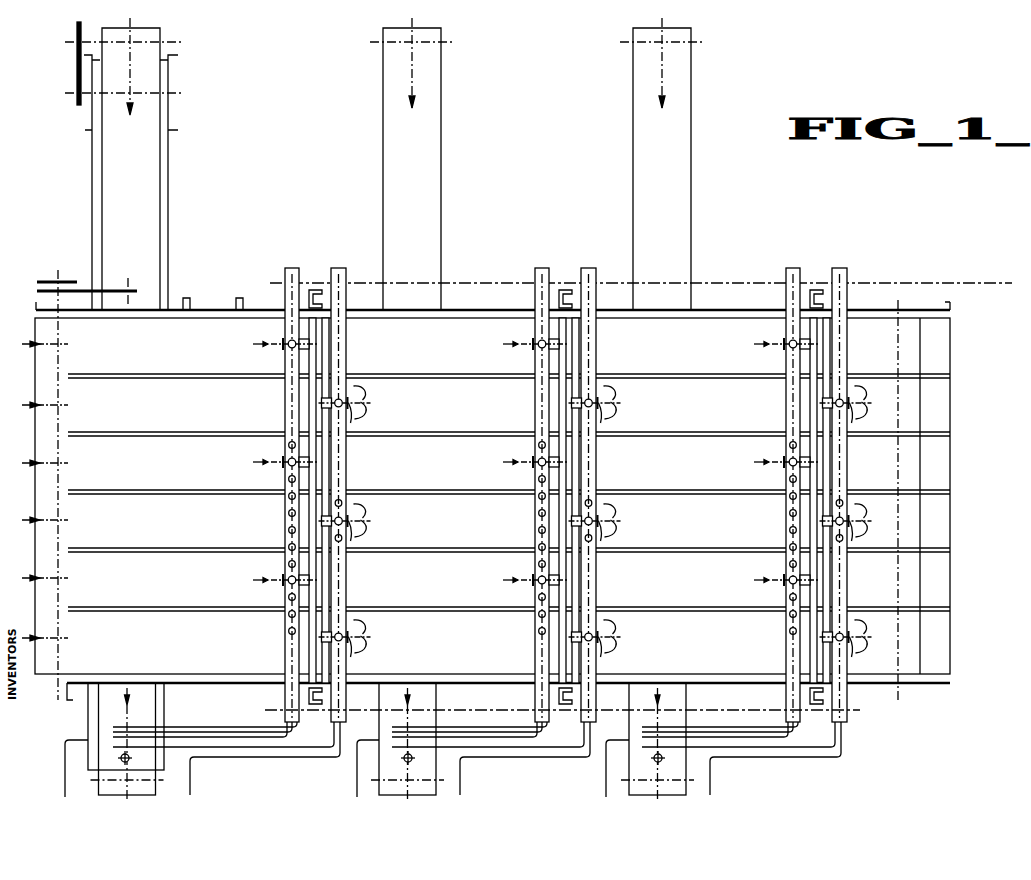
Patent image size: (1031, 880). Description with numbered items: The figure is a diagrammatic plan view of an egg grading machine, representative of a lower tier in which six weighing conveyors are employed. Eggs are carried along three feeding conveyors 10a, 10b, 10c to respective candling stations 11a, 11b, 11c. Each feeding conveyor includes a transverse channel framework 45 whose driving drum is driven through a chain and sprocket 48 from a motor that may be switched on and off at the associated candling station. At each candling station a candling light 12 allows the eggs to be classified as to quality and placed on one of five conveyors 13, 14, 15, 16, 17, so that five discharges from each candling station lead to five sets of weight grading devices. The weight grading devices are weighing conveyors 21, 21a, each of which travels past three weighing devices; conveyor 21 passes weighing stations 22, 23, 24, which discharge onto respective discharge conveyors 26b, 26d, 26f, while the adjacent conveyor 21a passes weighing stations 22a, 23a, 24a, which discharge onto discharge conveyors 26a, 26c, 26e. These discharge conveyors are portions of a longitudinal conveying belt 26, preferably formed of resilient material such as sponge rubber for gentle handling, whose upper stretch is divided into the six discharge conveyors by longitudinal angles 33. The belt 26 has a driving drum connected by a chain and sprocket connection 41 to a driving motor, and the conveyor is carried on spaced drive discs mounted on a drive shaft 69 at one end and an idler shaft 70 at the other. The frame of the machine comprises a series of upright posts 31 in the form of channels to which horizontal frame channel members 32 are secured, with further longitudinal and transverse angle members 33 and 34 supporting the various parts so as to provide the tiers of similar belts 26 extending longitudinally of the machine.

The feeding conveyor 10a is at (110, 184).
The feeding conveyor 10b is at (388, 184).
The feeding conveyor 10c is at (638, 184).
The candling station 11a is at (126, 749).
The candling station 11b is at (407, 749).
The candling station 11c is at (657, 749).
The candling light 12 is at (122, 761).
The conveyor 13 is at (174, 731).
The conveyor 14 is at (199, 735).
The conveyor 15 is at (222, 739).
The conveyor 16 is at (229, 750).
The conveyor 17 is at (258, 754).
The weighing conveyor 21 is at (284, 525).
The weighing conveyor 21a is at (347, 585).
The weighing device 22 is at (282, 580).
The weighing station 22a is at (600, 647).
The weighing device 23 is at (284, 462).
The weighing station 23a is at (600, 538).
The weighing device 24 is at (284, 346).
The weighing station 24a is at (600, 420).
The conveying belt 26 is at (33, 433).
The discharge conveyor 26a is at (178, 651).
The discharge conveyor 26b is at (178, 590).
The discharge conveyor 26c is at (178, 533).
The discharge conveyor 26d is at (178, 473).
The discharge conveyor 26e is at (178, 415).
The discharge conveyor 26f is at (178, 357).
The upright post 31 is at (312, 286).
The horizontal frame channel member 32 is at (205, 309).
The longitudinal angle member 33 is at (428, 424).
The angle member 34 is at (322, 353).
The chain and sprocket connection 41 is at (38, 292).
The transverse channel framework 45 is at (92, 212).
The chain and sprocket 48 is at (77, 75).
The drive shaft 69 is at (470, 282).
The idler shaft 70 is at (317, 716).